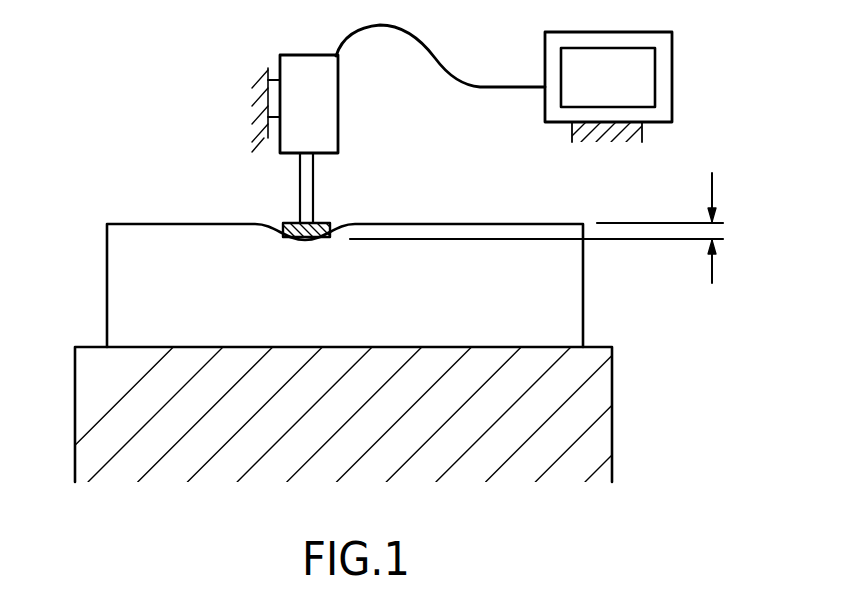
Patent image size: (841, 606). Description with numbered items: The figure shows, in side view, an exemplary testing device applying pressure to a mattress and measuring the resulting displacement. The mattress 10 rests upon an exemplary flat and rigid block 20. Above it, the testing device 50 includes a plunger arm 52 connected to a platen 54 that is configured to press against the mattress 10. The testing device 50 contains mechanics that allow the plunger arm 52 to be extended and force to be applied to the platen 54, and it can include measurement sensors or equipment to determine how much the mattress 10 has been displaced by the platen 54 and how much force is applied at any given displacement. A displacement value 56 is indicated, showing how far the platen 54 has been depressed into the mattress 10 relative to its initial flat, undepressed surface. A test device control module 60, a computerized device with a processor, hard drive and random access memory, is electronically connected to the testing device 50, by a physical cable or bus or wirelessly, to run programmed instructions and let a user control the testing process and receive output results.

The mattress 10 is at (155, 224).
The flat and rigid block 20 is at (612, 380).
The testing device 50 is at (293, 55).
The plunger arm 52 is at (297, 182).
The platen 54 is at (330, 232).
The displacement value 56 is at (713, 282).
The test device control module 60 is at (672, 68).